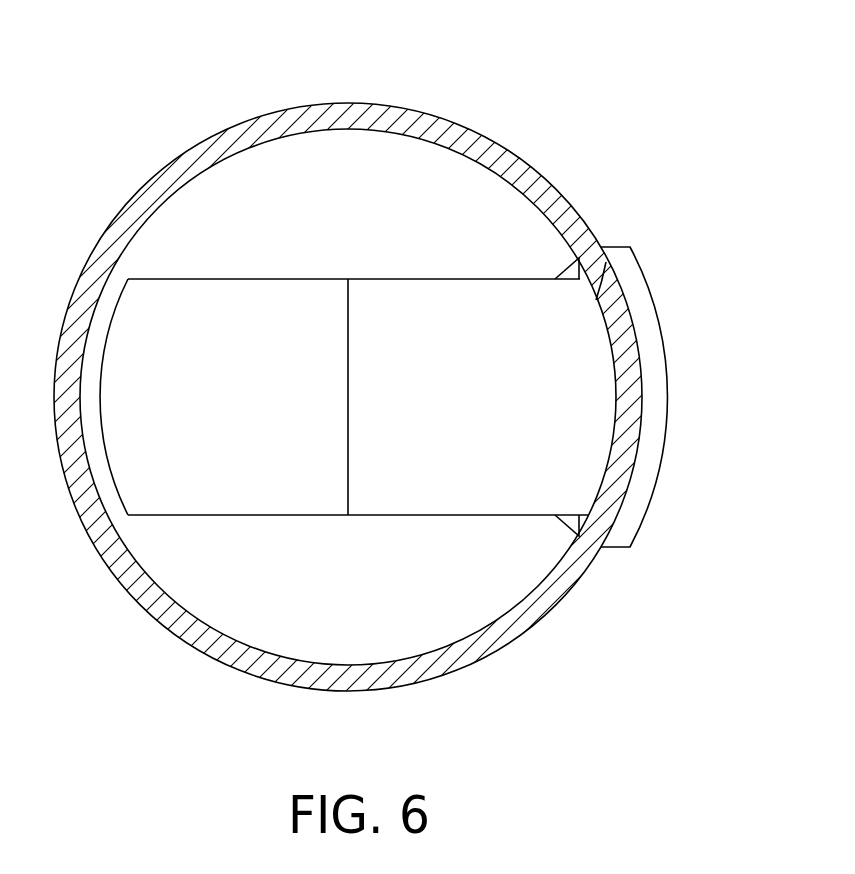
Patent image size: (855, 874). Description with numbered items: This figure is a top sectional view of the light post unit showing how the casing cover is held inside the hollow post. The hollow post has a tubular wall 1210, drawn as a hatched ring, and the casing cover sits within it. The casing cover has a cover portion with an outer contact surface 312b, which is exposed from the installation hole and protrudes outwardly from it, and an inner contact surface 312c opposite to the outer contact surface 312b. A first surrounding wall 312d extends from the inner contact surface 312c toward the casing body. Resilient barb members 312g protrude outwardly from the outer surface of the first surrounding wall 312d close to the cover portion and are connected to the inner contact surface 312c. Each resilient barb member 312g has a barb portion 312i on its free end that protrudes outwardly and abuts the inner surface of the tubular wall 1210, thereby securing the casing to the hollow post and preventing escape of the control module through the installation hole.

The tubular wall 1210 is at (440, 117).
The first surrounding wall 312d is at (452, 515).
The resilient barb member 312g is at (572, 263).
The barb portion 312i is at (590, 538).
The inner contact surface 312c is at (612, 282).
The outer contact surface 312b is at (664, 344).